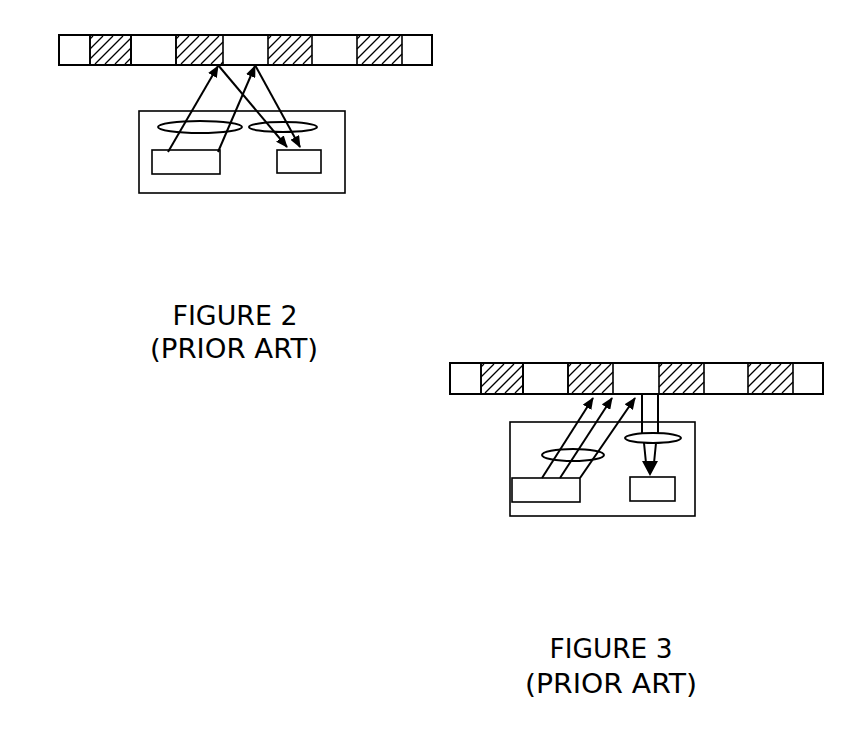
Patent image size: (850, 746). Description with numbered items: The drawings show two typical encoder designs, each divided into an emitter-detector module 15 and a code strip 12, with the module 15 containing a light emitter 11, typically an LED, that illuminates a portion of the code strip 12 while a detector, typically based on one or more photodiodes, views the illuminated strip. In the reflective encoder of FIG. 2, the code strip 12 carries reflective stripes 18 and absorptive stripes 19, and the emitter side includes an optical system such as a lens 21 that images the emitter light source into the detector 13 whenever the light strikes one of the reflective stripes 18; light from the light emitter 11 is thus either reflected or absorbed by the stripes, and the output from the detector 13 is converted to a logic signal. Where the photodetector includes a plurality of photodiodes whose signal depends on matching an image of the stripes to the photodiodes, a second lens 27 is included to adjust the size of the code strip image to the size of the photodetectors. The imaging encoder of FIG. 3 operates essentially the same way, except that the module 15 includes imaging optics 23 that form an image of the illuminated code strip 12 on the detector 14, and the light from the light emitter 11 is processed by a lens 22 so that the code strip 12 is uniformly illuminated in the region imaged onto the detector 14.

In FIG. 2, the light emitter 11 is at (195, 172).
In FIG. 3, the light emitter 11 is at (553, 500).
In FIG. 2, the code strip 12 is at (410, 66).
In FIG. 3, the code strip 12 is at (808, 396).
In FIG. 2, the detector 13 is at (283, 172).
In FIG. 3, the detector 14 is at (645, 500).
In FIG. 2, the emitter-detector module 15 is at (345, 189).
In FIG. 3, the emitter-detector module 15 is at (695, 502).
In FIG. 2, the reflective stripes 18 is at (160, 63).
In FIG. 3, the reflective stripes 18 is at (547, 363).
In FIG. 2, the absorptive stripes 19 is at (109, 62).
In FIG. 3, the absorptive stripes 19 is at (497, 363).
In FIG. 2, the lens 21 is at (152, 125).
In FIG. 3, the lens 22 is at (552, 452).
In FIG. 3, the imaging optics 23 is at (688, 431).
In FIG. 2, the second lens 27 is at (318, 125).